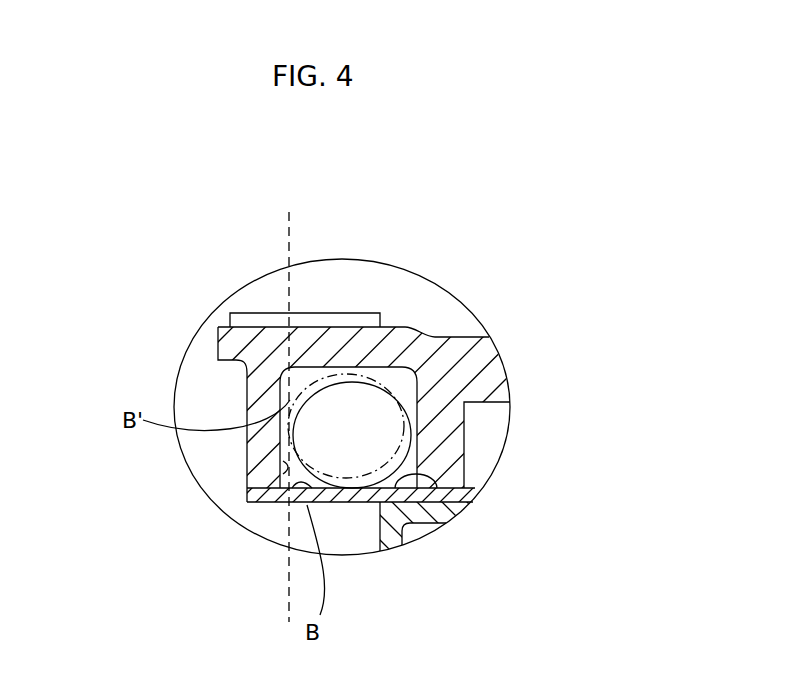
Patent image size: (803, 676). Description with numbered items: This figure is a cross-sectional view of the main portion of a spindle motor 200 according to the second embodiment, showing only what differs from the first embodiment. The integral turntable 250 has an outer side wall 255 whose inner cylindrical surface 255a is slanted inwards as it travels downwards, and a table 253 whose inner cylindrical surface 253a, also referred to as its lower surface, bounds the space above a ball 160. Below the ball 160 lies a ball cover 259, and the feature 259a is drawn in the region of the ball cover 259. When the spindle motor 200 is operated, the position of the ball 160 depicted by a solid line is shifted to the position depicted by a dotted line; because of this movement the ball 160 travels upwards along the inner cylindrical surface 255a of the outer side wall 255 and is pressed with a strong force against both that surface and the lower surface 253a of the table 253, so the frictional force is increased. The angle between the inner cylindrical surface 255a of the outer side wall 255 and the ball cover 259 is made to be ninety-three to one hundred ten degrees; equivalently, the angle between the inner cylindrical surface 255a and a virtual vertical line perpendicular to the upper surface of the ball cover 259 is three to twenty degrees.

The spindle motor 200 is at (474, 313).
The integral turntable 250 is at (416, 325).
The table 253 is at (238, 343).
The inner cylindrical surface of the table 253a is at (352, 372).
The ball 160 is at (318, 404).
The outer side wall 255 is at (283, 460).
The inner cylindrical surface of the outer side wall 255a is at (286, 468).
The ball cover 259 is at (347, 505).
The recess 259a is at (440, 523).